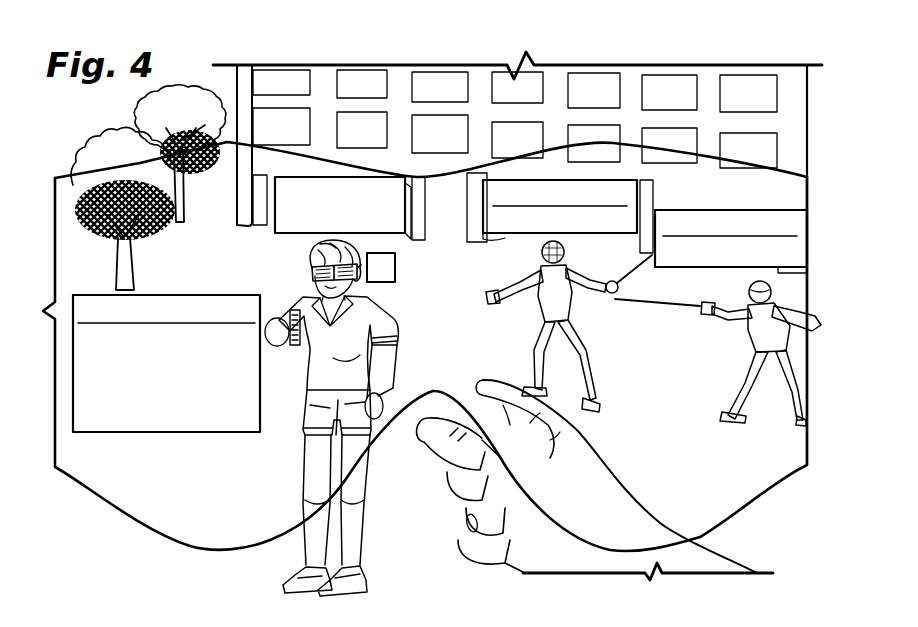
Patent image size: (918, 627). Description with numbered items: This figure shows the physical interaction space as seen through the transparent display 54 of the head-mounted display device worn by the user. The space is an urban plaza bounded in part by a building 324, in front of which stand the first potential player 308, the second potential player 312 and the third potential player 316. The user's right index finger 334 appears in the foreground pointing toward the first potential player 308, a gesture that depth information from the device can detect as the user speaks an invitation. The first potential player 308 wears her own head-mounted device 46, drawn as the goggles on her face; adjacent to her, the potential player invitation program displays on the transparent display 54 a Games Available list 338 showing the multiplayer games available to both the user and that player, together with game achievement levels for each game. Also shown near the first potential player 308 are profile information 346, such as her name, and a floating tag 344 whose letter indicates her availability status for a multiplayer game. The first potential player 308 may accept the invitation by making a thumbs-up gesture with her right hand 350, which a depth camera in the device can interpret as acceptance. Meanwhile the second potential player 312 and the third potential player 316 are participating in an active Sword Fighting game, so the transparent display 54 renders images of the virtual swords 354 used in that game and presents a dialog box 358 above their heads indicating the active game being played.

The transparent display 54 is at (187, 547).
The building 324 is at (237, 210).
The profile information 346 is at (308, 237).
The head-mounted display 46 is at (313, 274).
The floating tag 344 is at (396, 266).
The dialog box 358 is at (723, 210).
The swords 354 is at (655, 301).
The first potential player 308 is at (393, 322).
The right hand 350 is at (297, 345).
The right index finger 334 is at (481, 381).
The second potential player 312 is at (597, 384).
The third potential player 316 is at (737, 373).
The Games Available list 338 is at (207, 433).